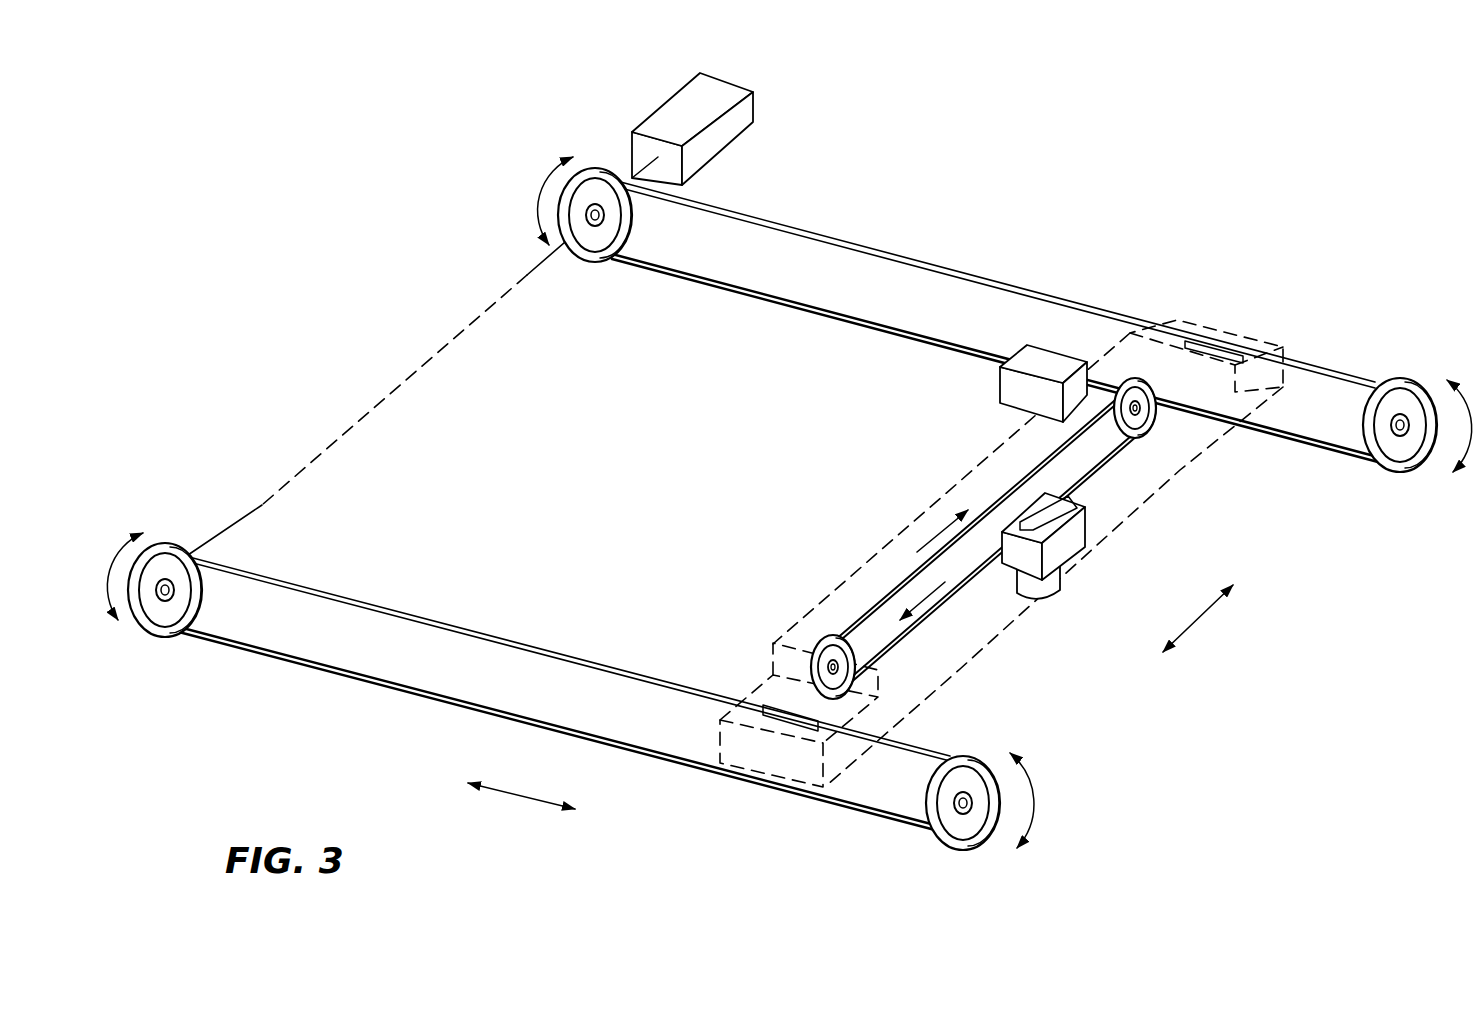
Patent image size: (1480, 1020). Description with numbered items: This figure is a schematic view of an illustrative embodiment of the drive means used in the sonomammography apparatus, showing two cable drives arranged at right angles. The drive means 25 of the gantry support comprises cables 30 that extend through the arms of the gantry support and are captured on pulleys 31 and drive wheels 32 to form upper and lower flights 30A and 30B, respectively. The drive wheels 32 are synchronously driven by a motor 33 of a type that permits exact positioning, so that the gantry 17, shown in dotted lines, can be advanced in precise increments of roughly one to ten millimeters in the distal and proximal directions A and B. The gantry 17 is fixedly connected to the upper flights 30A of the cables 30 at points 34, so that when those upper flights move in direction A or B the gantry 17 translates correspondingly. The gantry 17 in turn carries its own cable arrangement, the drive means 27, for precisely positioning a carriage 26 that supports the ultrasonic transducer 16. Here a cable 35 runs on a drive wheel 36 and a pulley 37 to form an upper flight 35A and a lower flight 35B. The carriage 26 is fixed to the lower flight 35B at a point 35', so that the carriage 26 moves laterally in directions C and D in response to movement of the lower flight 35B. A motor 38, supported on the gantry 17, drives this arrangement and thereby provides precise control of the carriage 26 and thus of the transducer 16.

The ultrasonic transducer 16 is at (1065, 600).
The gantry 17 is at (853, 572).
The drive means 25 is at (852, 190).
The carriage 26 is at (1087, 528).
The drive means 27 is at (985, 480).
The cables 30 is at (774, 503).
The upper flight 30A is at (1043, 292).
The lower flight 30B is at (848, 320).
The pulleys 31 is at (1423, 383).
The drive wheels 32 is at (575, 207).
The motor 33 is at (735, 95).
The points 34 is at (1227, 343).
The cable 35 is at (1003, 542).
The point 35' is at (1093, 550).
The upper flight 35A is at (893, 562).
The lower flight 35B is at (958, 622).
The drive wheel 36 is at (1150, 424).
The pulley 37 is at (820, 655).
The motor 38 is at (1010, 382).